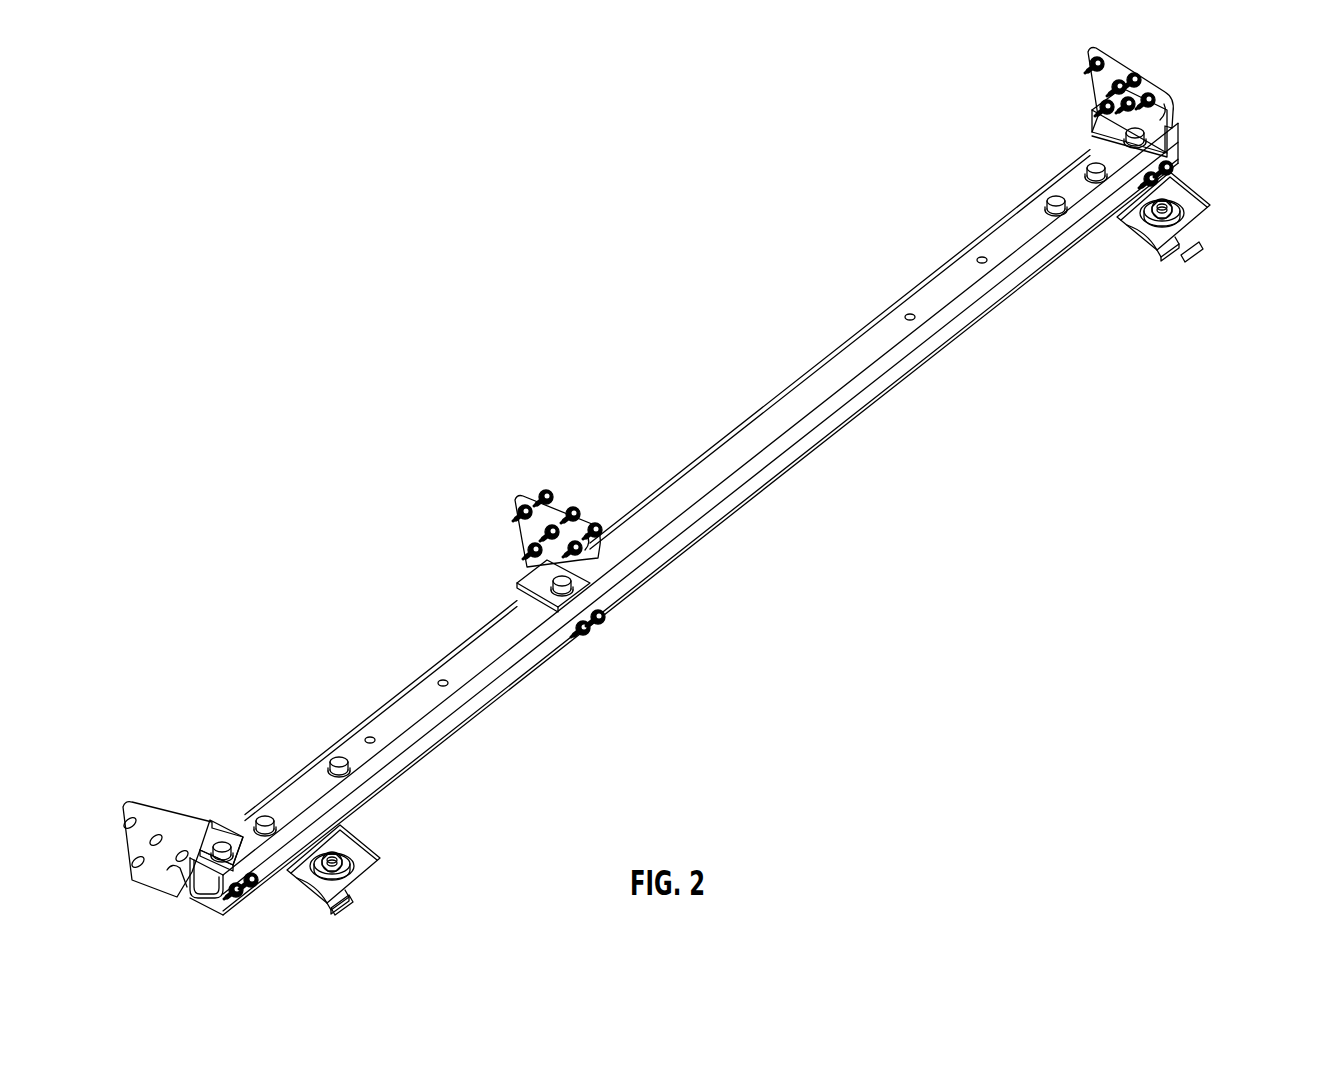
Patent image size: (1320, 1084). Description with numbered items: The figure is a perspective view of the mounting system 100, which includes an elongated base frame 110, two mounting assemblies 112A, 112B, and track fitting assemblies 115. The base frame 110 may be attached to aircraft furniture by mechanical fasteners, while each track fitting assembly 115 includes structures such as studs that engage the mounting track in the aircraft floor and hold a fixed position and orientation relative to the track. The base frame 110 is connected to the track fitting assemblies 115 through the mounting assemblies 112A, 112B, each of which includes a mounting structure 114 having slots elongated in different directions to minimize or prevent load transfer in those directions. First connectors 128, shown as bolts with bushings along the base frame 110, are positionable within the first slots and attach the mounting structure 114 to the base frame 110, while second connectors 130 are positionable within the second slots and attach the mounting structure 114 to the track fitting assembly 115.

The mounting system 100 is at (511, 307).
The base frame 110 is at (795, 447).
The first mounting assembly 112A is at (362, 890).
The second mounting assembly 112B is at (1147, 250).
The mounting structure 114 is at (1177, 203).
The track fitting assembly 115 is at (1200, 258).
The first connector 128 is at (1093, 160).
The second connector 130 is at (1165, 205).